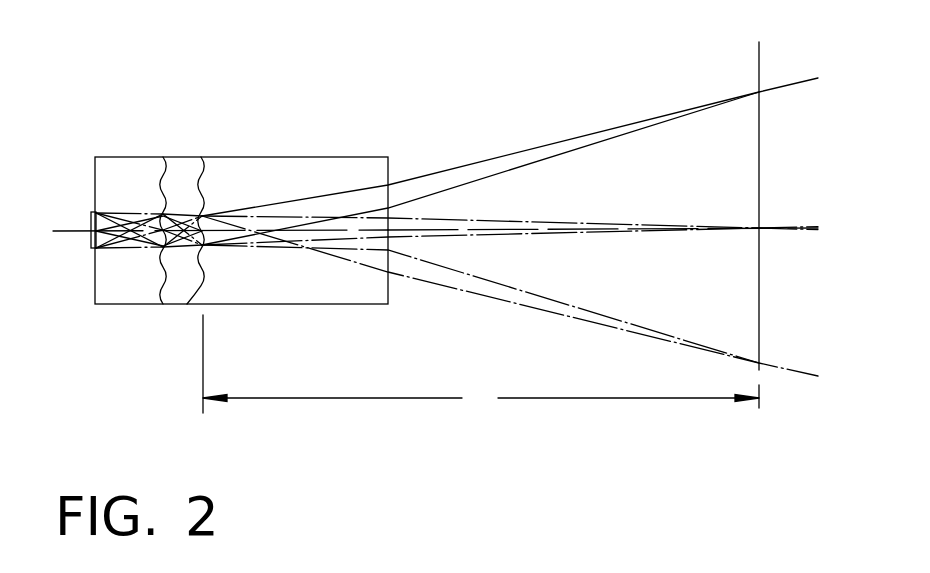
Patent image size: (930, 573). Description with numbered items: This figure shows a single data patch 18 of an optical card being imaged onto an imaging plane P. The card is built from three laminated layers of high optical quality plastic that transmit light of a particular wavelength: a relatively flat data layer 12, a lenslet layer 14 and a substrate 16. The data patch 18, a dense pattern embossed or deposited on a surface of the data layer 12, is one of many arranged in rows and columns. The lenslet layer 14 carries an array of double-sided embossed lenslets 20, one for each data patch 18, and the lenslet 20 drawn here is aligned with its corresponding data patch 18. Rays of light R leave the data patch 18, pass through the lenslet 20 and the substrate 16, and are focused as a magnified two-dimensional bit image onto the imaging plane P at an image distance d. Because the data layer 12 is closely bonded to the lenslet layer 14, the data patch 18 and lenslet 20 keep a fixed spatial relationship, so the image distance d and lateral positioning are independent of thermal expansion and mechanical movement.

The data layer 12 is at (129, 154).
The lenslet layer 14 is at (183, 154).
The substrate 16 is at (305, 156).
The data patch 18 is at (91, 250).
The lenslet 20 is at (188, 305).
The rays of light R is at (523, 148).
The imaging plane P is at (765, 62).
The image distance d is at (481, 364).